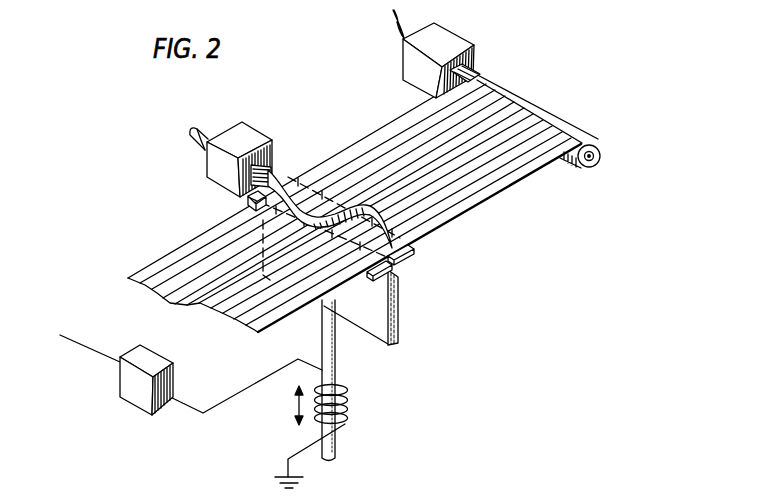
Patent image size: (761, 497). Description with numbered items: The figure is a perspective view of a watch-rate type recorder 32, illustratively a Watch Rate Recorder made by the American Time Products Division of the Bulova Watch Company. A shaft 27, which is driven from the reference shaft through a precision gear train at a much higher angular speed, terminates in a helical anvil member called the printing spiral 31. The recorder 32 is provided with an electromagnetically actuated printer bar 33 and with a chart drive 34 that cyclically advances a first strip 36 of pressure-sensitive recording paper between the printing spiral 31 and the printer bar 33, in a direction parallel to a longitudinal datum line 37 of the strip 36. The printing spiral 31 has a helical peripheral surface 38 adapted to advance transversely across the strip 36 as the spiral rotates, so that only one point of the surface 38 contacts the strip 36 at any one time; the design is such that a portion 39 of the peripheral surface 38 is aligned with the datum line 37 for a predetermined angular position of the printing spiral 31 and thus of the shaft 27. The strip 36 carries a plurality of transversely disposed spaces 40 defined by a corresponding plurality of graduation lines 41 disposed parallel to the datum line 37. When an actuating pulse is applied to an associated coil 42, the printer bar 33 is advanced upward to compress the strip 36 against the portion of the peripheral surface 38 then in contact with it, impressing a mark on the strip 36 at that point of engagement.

The shaft 27 is at (270, 152).
The printing spiral 31 is at (345, 205).
The recorder 32 is at (498, 253).
The printer bar 33 is at (398, 309).
The chart drive 34 is at (405, 57).
The first strip 36 is at (572, 118).
The longitudinal datum line 37 is at (507, 118).
The helical peripheral surface 38 is at (307, 231).
The portion of the peripheral surface 39 is at (330, 222).
The transversely disposed spaces 40 is at (493, 170).
The graduation lines 41 is at (522, 165).
The coil 42 is at (344, 398).